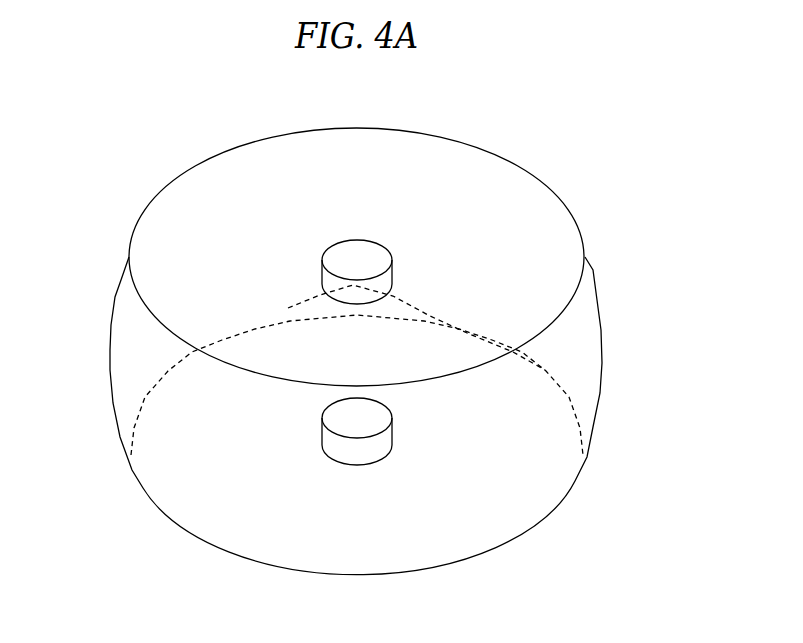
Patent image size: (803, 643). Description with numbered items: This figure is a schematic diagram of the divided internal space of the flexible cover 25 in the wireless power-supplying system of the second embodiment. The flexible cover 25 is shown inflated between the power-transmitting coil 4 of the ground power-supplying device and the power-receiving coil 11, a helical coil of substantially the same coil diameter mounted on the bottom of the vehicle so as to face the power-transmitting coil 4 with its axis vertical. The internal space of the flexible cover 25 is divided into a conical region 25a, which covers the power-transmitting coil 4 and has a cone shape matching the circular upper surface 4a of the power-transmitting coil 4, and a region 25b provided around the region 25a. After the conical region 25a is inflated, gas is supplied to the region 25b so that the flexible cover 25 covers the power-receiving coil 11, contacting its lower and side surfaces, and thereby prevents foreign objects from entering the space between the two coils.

The flexible cover 25 is at (566, 150).
The conical region 25a is at (290, 307).
The region 25b is at (200, 228).
The power-receiving coil 11 is at (367, 250).
The power-transmitting coil 4 is at (312, 497).
The upper surface 4a is at (333, 415).